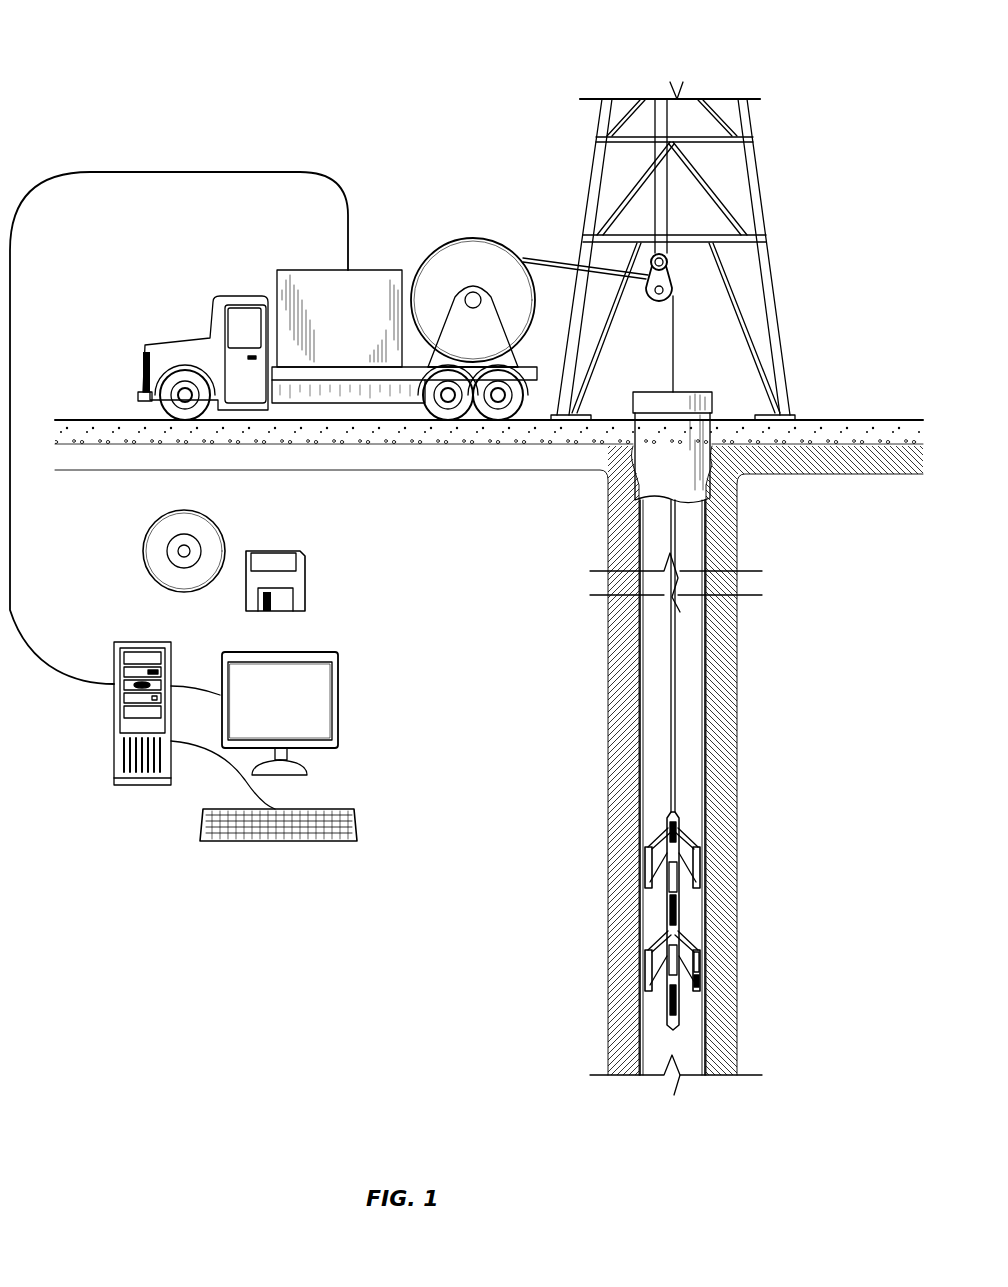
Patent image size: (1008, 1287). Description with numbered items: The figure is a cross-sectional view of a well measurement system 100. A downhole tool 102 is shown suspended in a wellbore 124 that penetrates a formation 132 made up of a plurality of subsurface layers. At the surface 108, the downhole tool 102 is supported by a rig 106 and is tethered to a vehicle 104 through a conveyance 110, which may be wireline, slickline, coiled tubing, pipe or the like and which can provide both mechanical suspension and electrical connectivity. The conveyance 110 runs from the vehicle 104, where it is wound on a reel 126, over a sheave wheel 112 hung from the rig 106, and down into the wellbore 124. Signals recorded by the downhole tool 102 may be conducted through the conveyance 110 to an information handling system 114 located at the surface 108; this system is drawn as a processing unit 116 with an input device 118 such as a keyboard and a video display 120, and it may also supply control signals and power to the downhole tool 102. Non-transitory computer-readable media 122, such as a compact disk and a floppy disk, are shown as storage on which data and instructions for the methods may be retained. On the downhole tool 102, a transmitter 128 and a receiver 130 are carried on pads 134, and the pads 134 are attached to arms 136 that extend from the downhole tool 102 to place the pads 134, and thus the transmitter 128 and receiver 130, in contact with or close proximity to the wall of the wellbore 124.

The well measurement system 100 is at (182, 52).
The downhole tool 102 is at (640, 922).
The vehicle 104 is at (295, 270).
The rig 106 is at (755, 161).
The surface 108 is at (845, 421).
The conveyance 110 is at (672, 665).
The sheave wheel 112 is at (655, 310).
The information handling system 114 is at (159, 851).
The processing unit 116 is at (147, 642).
The input device 118 is at (357, 824).
The video display 120 is at (340, 694).
The non-transitory computer-readable media 122 is at (225, 533).
The wellbore 124 is at (700, 546).
The cable reel 126 is at (462, 237).
The transmitter 128 is at (701, 956).
The receiver 130 is at (702, 984).
The formation 132 is at (874, 666).
The pad 134 is at (700, 834).
The arm 136 is at (700, 936).